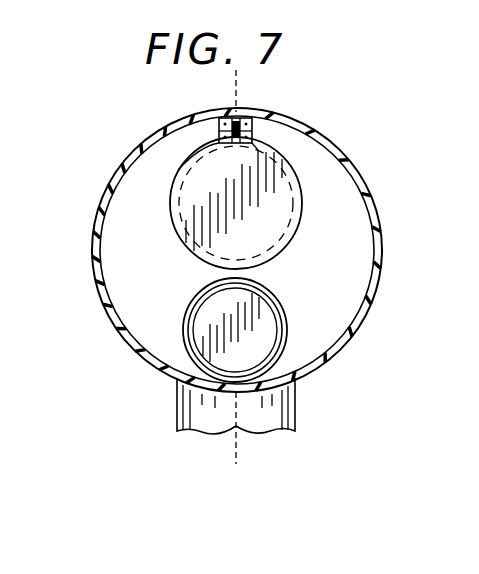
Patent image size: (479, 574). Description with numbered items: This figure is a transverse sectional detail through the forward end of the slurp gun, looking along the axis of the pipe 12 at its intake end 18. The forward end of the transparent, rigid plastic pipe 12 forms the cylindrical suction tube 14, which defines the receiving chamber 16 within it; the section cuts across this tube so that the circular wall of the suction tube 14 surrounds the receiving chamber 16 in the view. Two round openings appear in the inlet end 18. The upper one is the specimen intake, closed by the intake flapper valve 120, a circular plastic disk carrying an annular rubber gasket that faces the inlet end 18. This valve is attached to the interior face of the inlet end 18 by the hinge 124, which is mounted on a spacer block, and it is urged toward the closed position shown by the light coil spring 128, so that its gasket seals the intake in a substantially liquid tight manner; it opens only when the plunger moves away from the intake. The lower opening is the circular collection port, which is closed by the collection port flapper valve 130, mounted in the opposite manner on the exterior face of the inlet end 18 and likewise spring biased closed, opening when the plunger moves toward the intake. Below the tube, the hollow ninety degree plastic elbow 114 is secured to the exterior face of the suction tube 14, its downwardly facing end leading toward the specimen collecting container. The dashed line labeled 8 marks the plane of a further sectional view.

The section line 8- 8 is at (246, 80).
The pipe 12 is at (82, 200).
The suction tube 14 is at (378, 202).
The receiving chamber 16 is at (152, 282).
The intake end 18 is at (358, 251).
The elbow 114 is at (178, 410).
The intake flapper valve 120 is at (294, 192).
The hinge 124 is at (230, 114).
The coil spring 128 is at (176, 171).
The collection port flapper valve 130 is at (272, 319).